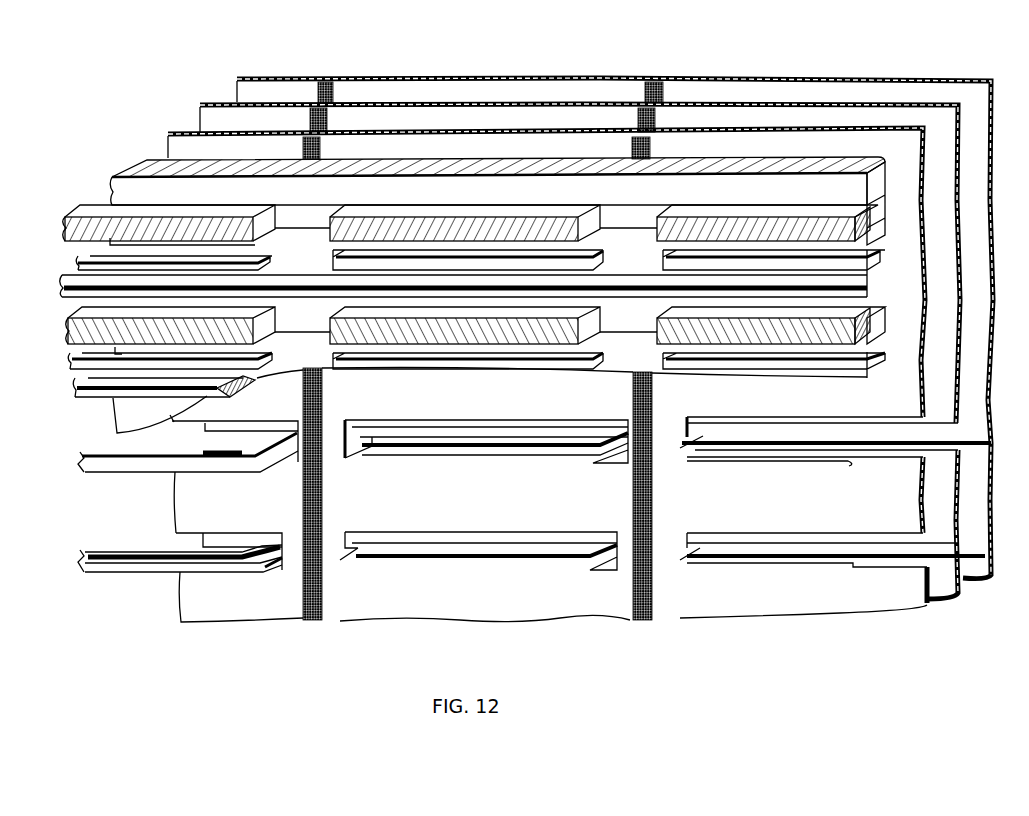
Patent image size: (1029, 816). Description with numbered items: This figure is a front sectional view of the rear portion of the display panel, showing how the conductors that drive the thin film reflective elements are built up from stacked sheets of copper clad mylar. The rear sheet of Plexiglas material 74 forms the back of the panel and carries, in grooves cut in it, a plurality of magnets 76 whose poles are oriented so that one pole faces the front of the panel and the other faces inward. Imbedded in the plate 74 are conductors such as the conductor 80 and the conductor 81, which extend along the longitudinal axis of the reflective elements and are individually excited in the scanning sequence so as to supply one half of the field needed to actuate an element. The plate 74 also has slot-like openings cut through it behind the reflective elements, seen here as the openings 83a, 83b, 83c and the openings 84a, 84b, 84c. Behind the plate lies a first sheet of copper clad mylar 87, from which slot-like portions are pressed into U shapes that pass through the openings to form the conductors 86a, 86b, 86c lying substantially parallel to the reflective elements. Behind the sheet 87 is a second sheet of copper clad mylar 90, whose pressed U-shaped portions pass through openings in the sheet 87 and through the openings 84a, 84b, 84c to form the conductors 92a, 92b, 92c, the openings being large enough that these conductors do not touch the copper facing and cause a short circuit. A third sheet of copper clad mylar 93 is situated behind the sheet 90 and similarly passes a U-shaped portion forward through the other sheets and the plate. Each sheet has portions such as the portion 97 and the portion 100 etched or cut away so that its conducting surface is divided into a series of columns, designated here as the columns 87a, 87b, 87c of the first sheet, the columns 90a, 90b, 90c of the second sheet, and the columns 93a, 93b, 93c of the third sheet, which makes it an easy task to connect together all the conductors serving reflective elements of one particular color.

The sheet of Plexiglas material 74 is at (122, 187).
The magnets 76 is at (330, 240).
The conductor 80 is at (65, 292).
The conductor 81 is at (85, 398).
The opening 83a is at (258, 245).
The opening 83b is at (586, 248).
The opening 83c is at (845, 263).
The opening 84a is at (113, 353).
The opening 84b is at (372, 348).
The opening 84c is at (771, 325).
The conductor 86a is at (87, 270).
The conductor 86b is at (595, 265).
The conductor 86c is at (855, 275).
The sheet of copper clad mylar 87 is at (168, 131).
The column of copper clad mylar sheet 87a is at (190, 148).
The column of copper clad mylar sheet 87b is at (598, 145).
The column of copper clad mylar sheet 87c is at (875, 140).
The sheet of copper clad mylar 90 is at (230, 100).
The column of copper clad mylar sheet 90a is at (212, 123).
The column of copper clad mylar sheet 90b is at (563, 120).
The column of copper clad mylar sheet 90c is at (840, 117).
The conductor 92a is at (83, 368).
The conductor 92b is at (418, 366).
The conductor 92c is at (693, 362).
The sheet of copper clad mylar 93 is at (257, 74).
The column of copper clad mylar sheet 93a is at (267, 92).
The column of copper clad mylar sheet 93b is at (527, 87).
The column of copper clad mylar sheet 93c is at (797, 90).
The etched away portion 97 is at (315, 620).
The etched away portion 100 is at (642, 617).